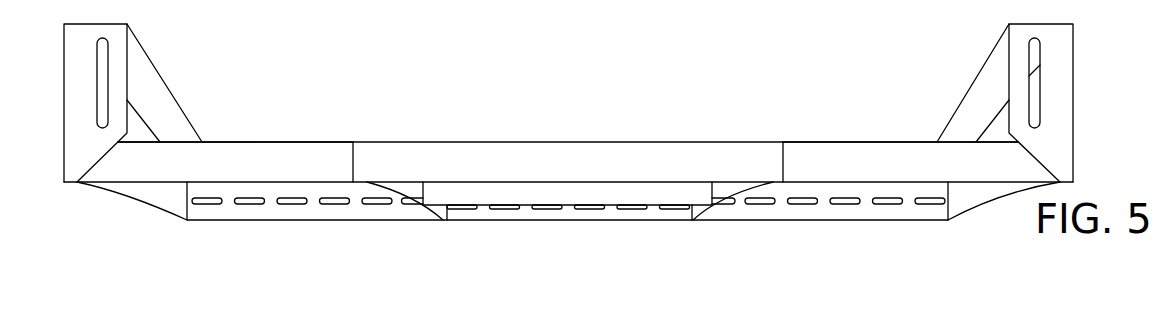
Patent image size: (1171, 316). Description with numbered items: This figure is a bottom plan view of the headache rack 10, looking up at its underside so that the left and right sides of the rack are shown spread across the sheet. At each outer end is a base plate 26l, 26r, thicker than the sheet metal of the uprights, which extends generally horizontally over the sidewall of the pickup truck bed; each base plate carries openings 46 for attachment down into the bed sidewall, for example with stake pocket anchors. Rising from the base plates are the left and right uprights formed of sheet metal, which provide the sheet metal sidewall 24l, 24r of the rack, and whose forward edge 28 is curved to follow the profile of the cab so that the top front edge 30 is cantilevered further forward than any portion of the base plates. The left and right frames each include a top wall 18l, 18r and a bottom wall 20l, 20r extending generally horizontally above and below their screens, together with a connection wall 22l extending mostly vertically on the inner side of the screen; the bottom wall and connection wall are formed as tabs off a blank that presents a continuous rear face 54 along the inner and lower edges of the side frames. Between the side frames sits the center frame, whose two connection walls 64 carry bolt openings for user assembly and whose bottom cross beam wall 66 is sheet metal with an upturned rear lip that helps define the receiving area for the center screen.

The headache rack 10 is at (755, 108).
The top wall 18l is at (312, 212).
The top wall 18r is at (818, 213).
The bottom wall 20l is at (251, 157).
The bottom wall 20r is at (843, 157).
The connection wall 22l is at (363, 12).
The sheet metal sidewall 24l is at (278, 3).
The sheet metal sidewall 24r is at (893, 3).
The left base plate 26l is at (115, 37).
The right base plate 26r is at (1060, 47).
The forward edge 28 is at (142, 198).
The top front edge 30 is at (540, 226).
The openings 46 is at (98, 66).
The continuous rear face 54 is at (828, 7).
The connection walls 64 is at (410, 188).
The bottom cross beam wall 66 is at (534, 12).